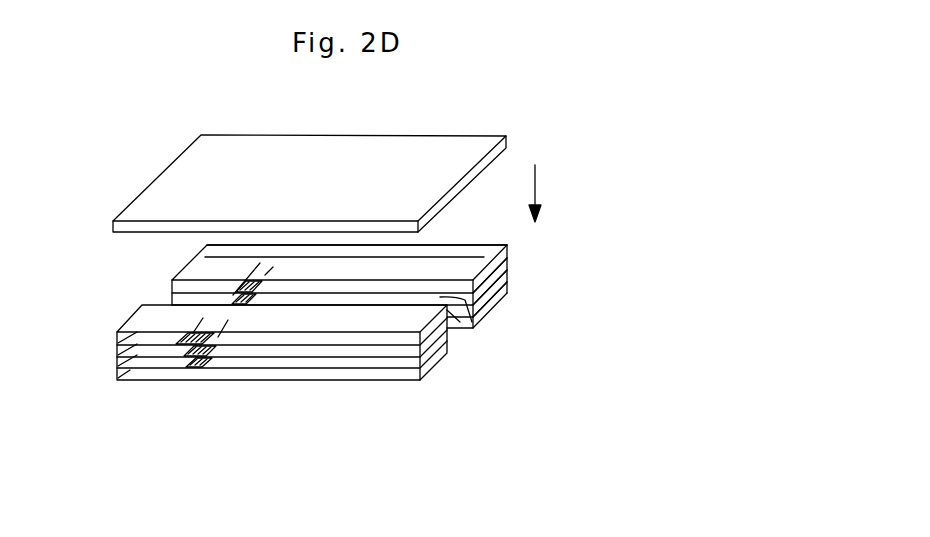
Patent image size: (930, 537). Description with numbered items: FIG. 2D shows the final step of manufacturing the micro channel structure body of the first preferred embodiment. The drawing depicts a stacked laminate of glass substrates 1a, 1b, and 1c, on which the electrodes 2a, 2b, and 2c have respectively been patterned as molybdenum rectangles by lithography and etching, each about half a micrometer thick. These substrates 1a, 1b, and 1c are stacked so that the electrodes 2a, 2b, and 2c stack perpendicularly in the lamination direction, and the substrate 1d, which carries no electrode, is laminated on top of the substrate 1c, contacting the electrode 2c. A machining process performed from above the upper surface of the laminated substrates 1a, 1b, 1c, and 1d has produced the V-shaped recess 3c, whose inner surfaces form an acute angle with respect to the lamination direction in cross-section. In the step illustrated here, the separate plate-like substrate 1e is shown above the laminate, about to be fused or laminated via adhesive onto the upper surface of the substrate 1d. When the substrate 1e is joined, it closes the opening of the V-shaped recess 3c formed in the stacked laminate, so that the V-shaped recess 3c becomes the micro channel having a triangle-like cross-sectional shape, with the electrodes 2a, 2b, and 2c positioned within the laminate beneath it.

The substrate 1a is at (503, 297).
The substrate 1b is at (508, 280).
The substrate 1c is at (507, 262).
The substrate 1d is at (512, 248).
The substrate 1e is at (465, 152).
The electrode 2a is at (195, 368).
The electrode 2b is at (210, 347).
The electrode 2c is at (185, 338).
The V-shaped recess 3c is at (492, 303).